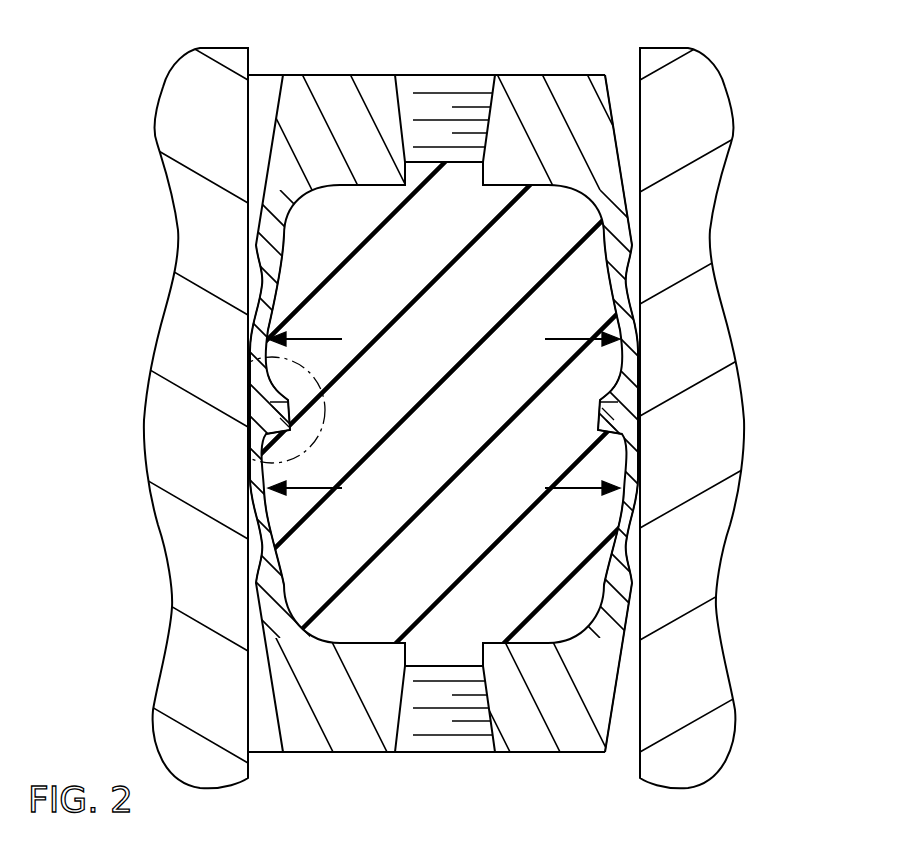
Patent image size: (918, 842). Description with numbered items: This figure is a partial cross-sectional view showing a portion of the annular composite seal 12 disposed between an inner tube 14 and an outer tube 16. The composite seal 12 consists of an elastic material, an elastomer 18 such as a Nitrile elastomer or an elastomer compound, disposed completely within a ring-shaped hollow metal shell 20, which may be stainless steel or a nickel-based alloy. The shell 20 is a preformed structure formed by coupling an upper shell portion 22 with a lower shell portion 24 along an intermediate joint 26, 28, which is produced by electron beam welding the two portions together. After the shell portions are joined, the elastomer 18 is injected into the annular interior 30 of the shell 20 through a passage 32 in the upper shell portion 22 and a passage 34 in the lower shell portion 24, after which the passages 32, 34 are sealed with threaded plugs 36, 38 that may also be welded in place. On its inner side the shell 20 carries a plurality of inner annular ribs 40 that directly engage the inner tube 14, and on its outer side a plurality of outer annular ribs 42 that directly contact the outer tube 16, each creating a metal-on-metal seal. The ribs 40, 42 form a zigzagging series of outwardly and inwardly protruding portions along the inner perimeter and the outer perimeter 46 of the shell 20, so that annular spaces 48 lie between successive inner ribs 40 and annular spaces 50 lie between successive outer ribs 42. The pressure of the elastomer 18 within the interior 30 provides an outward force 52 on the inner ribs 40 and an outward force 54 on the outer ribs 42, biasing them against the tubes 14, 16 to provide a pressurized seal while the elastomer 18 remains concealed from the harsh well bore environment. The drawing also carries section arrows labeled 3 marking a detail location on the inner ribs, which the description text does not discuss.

The composite seal 12 is at (614, 40).
The inner tube 14 is at (170, 73).
The outer tube 16 is at (716, 73).
The elastomer 18 is at (585, 577).
The metal shell 20 is at (620, 230).
The upper shell portion 22 is at (358, 75).
The lower shell portion 24 is at (335, 752).
The intermediate joint 26 is at (262, 430).
The intermediate joint 28 is at (620, 415).
The annular interior 30 is at (567, 183).
The passage 32 is at (493, 118).
The passage 34 is at (390, 722).
The plug 36 is at (452, 95).
The plug 38 is at (455, 752).
The inner annular ribs 40 is at (250, 335).
The outer annular ribs 42 is at (642, 348).
The outer perimeter 46 is at (620, 665).
The annular spaces 48 is at (250, 268).
The annular spaces 50 is at (628, 270).
The outward force 52 is at (303, 338).
The outward force 54 is at (548, 340).
The section line 3- 3 is at (242, 363).